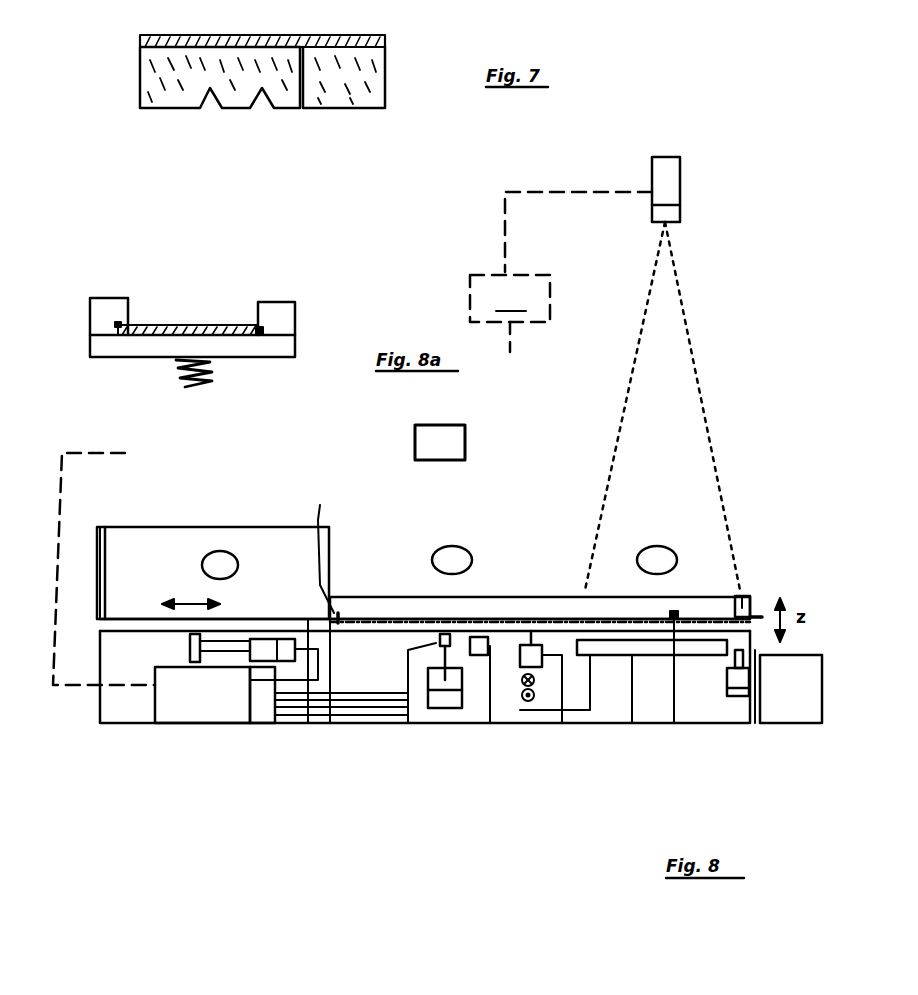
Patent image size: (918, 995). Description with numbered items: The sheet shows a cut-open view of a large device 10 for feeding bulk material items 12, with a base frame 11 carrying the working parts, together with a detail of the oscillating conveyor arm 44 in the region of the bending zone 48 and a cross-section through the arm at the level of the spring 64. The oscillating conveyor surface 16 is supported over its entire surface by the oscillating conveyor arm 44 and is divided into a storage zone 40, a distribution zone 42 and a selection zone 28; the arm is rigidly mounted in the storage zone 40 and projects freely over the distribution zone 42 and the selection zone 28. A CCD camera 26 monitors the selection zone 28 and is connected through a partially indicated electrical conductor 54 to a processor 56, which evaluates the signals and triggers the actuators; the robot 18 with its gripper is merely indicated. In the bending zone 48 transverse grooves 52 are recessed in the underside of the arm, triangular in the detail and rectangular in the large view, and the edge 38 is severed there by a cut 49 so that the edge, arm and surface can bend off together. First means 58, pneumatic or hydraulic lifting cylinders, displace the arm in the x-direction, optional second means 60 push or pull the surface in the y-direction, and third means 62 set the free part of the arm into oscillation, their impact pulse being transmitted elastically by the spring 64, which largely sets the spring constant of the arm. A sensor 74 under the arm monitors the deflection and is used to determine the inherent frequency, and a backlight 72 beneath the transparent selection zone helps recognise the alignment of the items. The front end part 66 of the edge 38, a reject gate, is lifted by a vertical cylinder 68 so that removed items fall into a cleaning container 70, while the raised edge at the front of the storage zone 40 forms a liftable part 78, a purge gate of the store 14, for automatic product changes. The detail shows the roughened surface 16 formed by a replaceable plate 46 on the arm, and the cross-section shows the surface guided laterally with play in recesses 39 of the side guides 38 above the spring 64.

In FIG. 8, the apparatus 10 is at (155, 832).
In FIG. 8, the base frame 11 is at (355, 724).
In FIG. 8, the bulk material items 12 is at (674, 724).
In FIG. 8, the store 14 is at (208, 548).
In FIG. 7, the oscillating conveyor surface 16 is at (225, 45).
In FIG. 8A, the oscillating conveyor surface 16 is at (182, 325).
In FIG. 8, the oscillating conveyor surface 16 is at (395, 619).
In FIG. 8, the robot 18 is at (440, 442).
In FIG. 8, the CCD camera 26 is at (665, 166).
In FIG. 8, the selection zone 28 is at (657, 560).
In FIG. 8A, the edge 38 is at (278, 320).
In FIG. 8, the edge 38 is at (558, 603).
In FIG. 8A, the recesses 39 is at (262, 325).
In FIG. 8, the storage zone 40 is at (213, 573).
In FIG. 8, the distribution zone 42 is at (540, 582).
In FIG. 7, the oscillating conveyor arm 44 is at (350, 82).
In FIG. 8A, the oscillating conveyor arm 44 is at (152, 345).
In FIG. 8, the oscillating conveyor arm 44 is at (515, 626).
In FIG. 7, the plate 46 is at (378, 47).
In FIG. 7, the bending zone 48 is at (258, 153).
In FIG. 8, the bending zone 48 is at (338, 613).
In FIG. 8, the cut 49 is at (321, 548).
In FIG. 7, the transverse grooves 52 is at (208, 97).
In FIG. 8, the transverse grooves 52 is at (322, 724).
In FIG. 8, the electrical conductor 54 is at (548, 198).
In FIG. 8, the processor 56 is at (185, 724).
In FIG. 8, the first means / lifting cylinders 58 is at (248, 724).
In FIG. 8, the second means 60 is at (562, 724).
In FIG. 8, the third means / cylinders 62 is at (445, 724).
In FIG. 8A, the spring 64 is at (188, 385).
In FIG. 8, the spring 64 is at (395, 724).
In FIG. 8, the front end part (reject gate) 66 is at (746, 596).
In FIG. 8, the cylinder 68 is at (727, 724).
In FIG. 8, the cleaning container 70 is at (800, 705).
In FIG. 8, the backlight 72 is at (632, 724).
In FIG. 8, the sensor 74 is at (488, 724).
In FIG. 8, the liftable part (purge gate) 78 is at (108, 530).